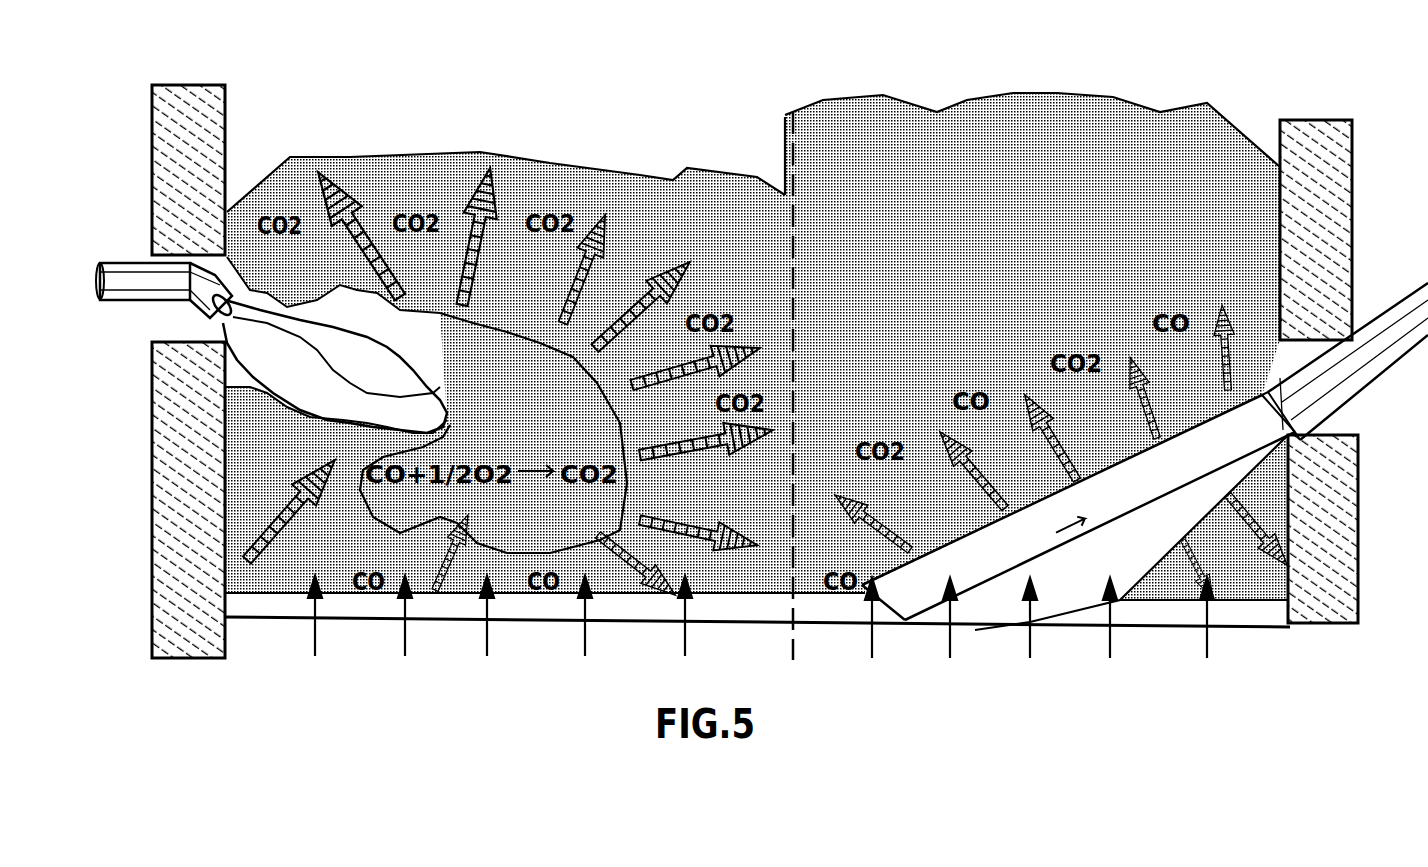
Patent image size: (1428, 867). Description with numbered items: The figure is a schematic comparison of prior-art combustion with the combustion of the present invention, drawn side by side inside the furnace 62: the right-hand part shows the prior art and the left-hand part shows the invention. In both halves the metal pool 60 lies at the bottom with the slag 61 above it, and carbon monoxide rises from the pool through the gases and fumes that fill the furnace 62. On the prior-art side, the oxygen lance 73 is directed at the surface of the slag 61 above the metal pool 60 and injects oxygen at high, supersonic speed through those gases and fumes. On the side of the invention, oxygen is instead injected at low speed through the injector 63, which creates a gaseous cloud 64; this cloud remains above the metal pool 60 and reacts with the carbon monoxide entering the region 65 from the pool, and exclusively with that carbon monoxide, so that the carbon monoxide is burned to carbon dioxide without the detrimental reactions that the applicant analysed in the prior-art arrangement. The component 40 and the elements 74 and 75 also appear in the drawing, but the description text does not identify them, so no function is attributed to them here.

The refractory furnace wall 40 is at (152, 548).
The metal pool 60 is at (275, 630).
The slag 61 is at (368, 603).
The furnace 62 is at (512, 567).
The injector 63 is at (137, 268).
The gaseous cloud 64 is at (400, 370).
The region 65 is at (540, 345).
The oxygen lance 73 is at (1425, 360).
The rising CO gas flow 74 is at (1205, 430).
The CO2 gas flow toward lance 75 is at (921, 491).